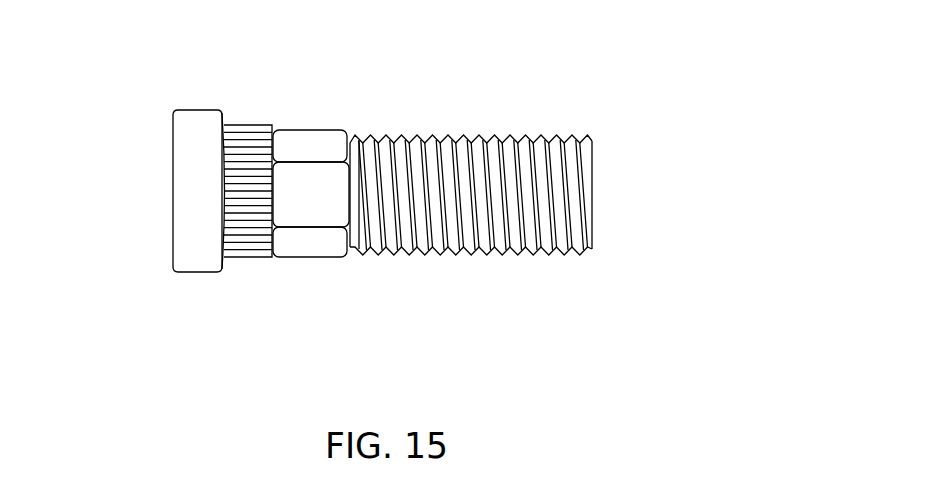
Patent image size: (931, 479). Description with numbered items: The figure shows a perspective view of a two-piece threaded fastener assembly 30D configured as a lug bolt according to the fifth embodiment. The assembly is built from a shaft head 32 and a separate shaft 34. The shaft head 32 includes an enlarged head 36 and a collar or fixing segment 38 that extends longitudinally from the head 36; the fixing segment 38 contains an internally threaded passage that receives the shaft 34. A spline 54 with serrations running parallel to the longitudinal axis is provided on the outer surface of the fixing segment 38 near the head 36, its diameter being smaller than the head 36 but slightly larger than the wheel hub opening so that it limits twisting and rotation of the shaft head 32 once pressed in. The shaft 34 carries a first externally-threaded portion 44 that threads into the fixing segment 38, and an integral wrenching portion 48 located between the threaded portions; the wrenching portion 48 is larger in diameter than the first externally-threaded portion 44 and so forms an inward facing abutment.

The threaded fastener assembly 30D is at (725, 140).
The shaft head 32 is at (200, 112).
The shaft 34 is at (472, 190).
The head 36 is at (173, 244).
The fixing segment 38 is at (262, 256).
The first externally-threaded portion 44 is at (517, 257).
The wrenching portion 48 is at (315, 258).
The spline 54 is at (242, 257).